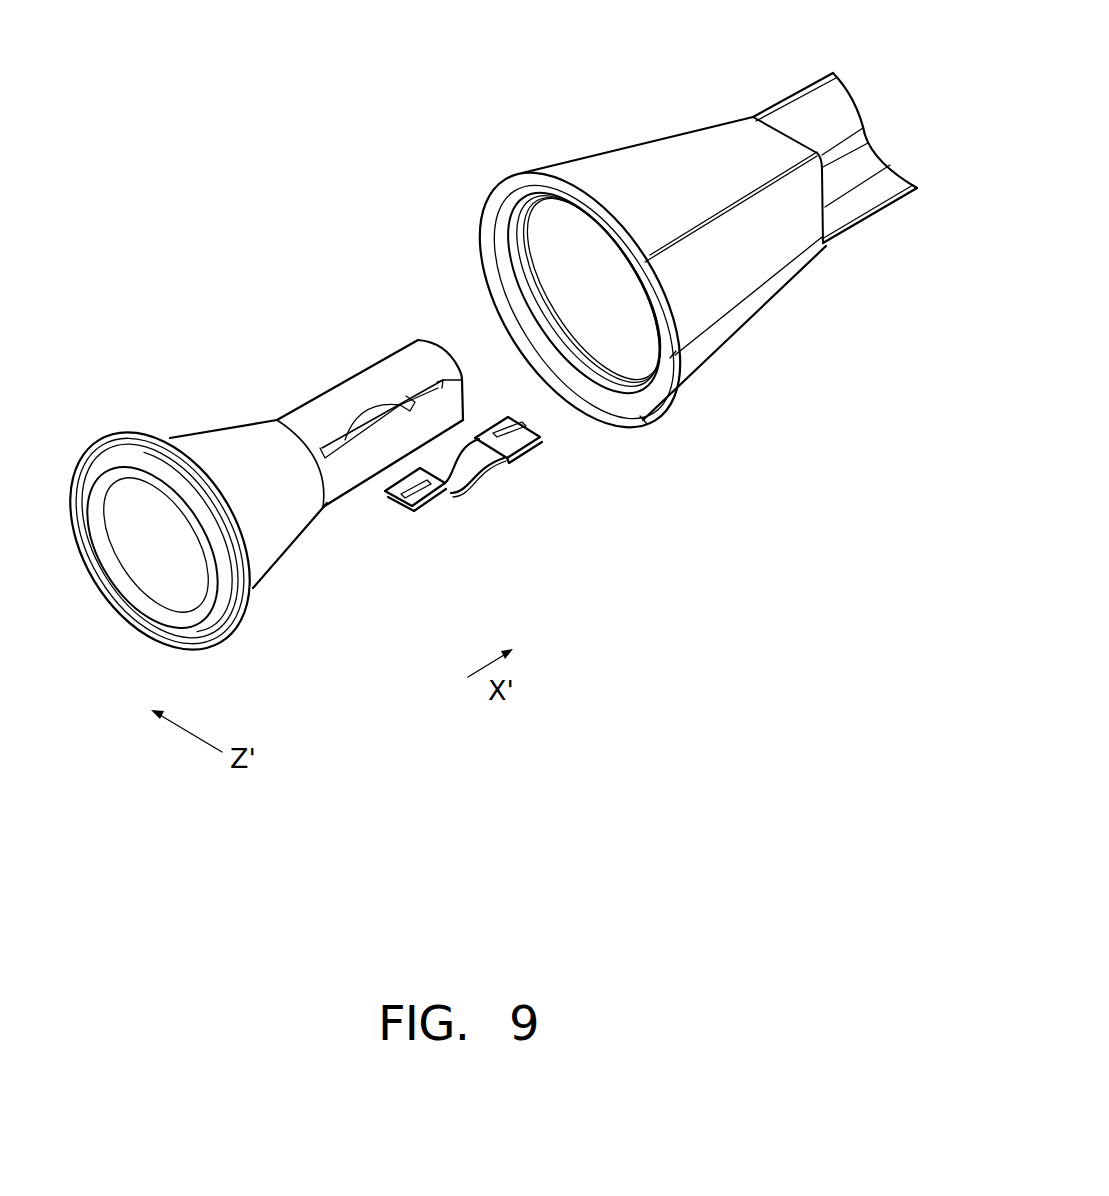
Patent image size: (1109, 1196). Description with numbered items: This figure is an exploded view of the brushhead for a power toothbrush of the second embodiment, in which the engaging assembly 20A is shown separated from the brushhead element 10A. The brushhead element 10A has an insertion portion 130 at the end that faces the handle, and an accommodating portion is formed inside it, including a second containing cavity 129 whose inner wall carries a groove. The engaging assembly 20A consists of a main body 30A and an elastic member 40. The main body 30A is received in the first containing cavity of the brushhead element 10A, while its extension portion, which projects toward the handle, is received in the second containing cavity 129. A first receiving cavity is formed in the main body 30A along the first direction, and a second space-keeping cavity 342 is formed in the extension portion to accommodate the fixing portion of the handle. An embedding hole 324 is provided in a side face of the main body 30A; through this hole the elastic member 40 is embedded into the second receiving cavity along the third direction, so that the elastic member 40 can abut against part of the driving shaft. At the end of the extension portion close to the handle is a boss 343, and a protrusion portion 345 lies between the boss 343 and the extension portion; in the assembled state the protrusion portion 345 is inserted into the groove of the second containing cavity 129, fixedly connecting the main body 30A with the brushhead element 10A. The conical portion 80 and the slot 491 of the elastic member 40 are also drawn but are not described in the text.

The brushhead element 10A is at (779, 78).
The insertion portion 130 is at (677, 148).
The second containing cavity 129 is at (553, 232).
The engaging assembly 20A is at (294, 349).
The main body 30A is at (405, 367).
The embedding hole 324 is at (425, 393).
The conical body 80 is at (268, 537).
The protrusion portion 345 is at (143, 432).
The second space-keeping cavity 342 is at (153, 577).
The boss 343 is at (230, 610).
The elastic member 40 is at (482, 473).
The slot 491 is at (532, 443).